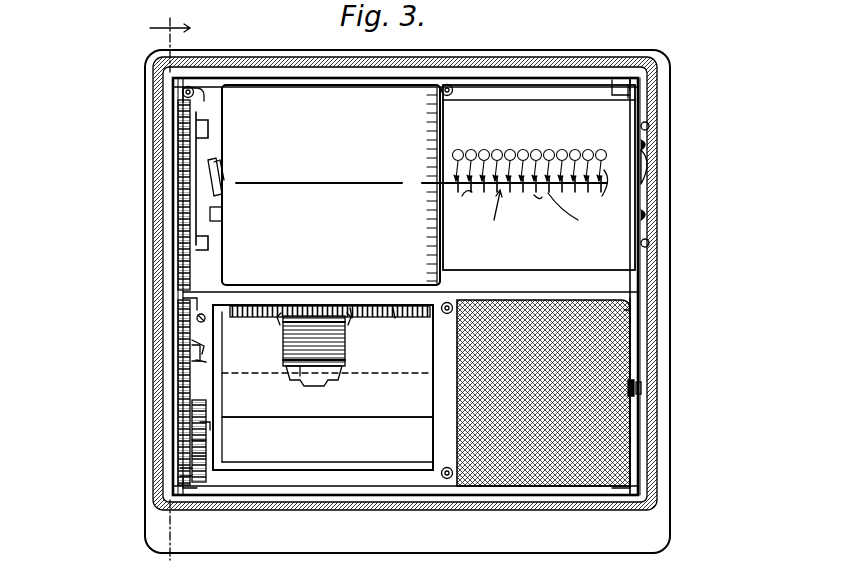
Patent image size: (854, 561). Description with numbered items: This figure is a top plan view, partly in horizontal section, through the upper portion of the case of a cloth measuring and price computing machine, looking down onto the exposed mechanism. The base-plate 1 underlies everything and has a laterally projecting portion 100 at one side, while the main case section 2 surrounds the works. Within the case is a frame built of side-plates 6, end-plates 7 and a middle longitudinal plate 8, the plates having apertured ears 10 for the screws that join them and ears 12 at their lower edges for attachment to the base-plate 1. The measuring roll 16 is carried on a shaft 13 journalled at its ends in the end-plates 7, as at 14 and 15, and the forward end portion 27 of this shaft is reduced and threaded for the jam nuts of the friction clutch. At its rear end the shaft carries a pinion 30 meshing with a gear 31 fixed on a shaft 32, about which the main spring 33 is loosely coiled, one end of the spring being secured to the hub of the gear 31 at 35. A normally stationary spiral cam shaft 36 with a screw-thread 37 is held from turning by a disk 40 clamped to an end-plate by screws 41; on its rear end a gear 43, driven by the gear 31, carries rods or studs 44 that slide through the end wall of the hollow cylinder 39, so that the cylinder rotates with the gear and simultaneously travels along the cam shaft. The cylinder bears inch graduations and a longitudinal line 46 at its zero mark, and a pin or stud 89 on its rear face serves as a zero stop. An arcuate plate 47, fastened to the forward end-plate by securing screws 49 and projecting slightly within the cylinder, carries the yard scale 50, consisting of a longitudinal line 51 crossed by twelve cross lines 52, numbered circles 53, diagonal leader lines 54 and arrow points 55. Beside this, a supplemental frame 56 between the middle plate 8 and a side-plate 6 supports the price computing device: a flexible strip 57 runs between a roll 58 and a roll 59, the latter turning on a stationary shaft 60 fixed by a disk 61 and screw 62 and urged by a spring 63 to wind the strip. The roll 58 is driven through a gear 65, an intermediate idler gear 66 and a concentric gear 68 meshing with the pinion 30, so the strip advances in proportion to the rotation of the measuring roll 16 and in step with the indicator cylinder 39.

The base-plate 1 is at (216, 56).
The main case section 2 is at (263, 60).
The side-plates 6 is at (392, 520).
The end-plates 7 is at (176, 246).
The middle longitudinal plate 8 is at (410, 281).
The ears 10 is at (178, 88).
The ears 12 is at (180, 96).
The shaft 13 is at (428, 392).
The journal 14 is at (194, 392).
The journal 15 is at (642, 390).
The measuring roll 16 is at (600, 442).
The forward end portion 27 is at (636, 384).
The pinion 30 is at (180, 390).
The gear 31 is at (196, 356).
The shaft 32 is at (356, 312).
The spring 33 is at (390, 312).
The spring attachment point 35 is at (206, 320).
The spiral cam shaft 36 is at (206, 170).
The screw-thread 37 is at (216, 184).
The hollow cylinder 39 is at (331, 185).
The circular plate or disk 40 is at (648, 166).
The screws 41 is at (648, 146).
The gear 43 is at (180, 172).
The rods or studs 44 is at (210, 130).
The longitudinal line 46 is at (325, 200).
The arcuate plate 47 is at (572, 106).
The securing screws 49 is at (648, 126).
The scale 50 is at (546, 204).
The longitudinal line 51 is at (486, 219).
The cross lines 52 is at (469, 210).
The circles 53 is at (498, 151).
The diagonal leader lines 54 is at (572, 210).
The arrow points 55 is at (569, 221).
The supplemental frame 56 is at (328, 304).
The flexible strip or tape 57 is at (314, 364).
The roll 58 is at (327, 439).
The roll 59 is at (296, 370).
The shaft 60 is at (282, 350).
The disk 61 is at (200, 362).
The screw 62 is at (196, 344).
The spring 63 is at (346, 350).
The gear 65 is at (206, 432).
The intermediate idler gear 66 is at (182, 470).
The gear 68 is at (194, 446).
The pin or stud 89 is at (222, 216).
The laterally projecting portion 100 is at (166, 530).